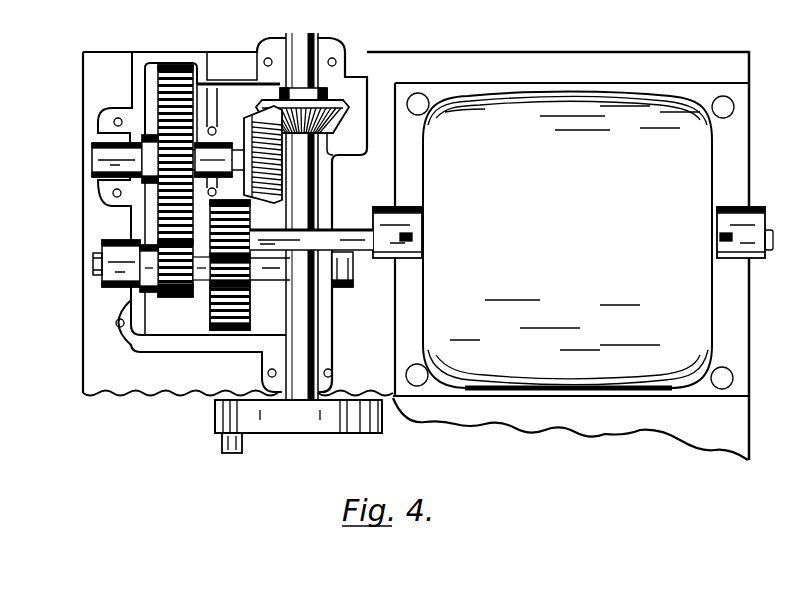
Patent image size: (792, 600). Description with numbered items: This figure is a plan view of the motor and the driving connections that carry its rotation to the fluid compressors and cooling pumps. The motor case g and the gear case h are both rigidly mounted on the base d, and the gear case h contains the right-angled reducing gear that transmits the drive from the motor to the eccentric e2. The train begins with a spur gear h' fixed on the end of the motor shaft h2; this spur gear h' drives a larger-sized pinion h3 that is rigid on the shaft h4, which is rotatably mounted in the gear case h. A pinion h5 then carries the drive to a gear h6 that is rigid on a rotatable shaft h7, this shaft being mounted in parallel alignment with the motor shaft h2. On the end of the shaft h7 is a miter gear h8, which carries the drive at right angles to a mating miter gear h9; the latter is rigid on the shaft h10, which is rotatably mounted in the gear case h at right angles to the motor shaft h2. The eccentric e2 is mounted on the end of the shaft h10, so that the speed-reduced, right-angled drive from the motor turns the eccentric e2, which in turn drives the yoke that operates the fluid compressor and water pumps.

The base d is at (397, 58).
The motor case g is at (573, 240).
The gear case h is at (219, 217).
The spur gear h' is at (212, 186).
The motor shaft h2 is at (311, 240).
The pinion h3 is at (250, 302).
The shaft h4 is at (203, 280).
The pinion h5 is at (167, 297).
The gear h6 is at (167, 90).
The shaft h7 is at (103, 158).
The miter gear h8 is at (260, 133).
The miter gear h9 is at (350, 122).
The shaft h10 is at (300, 321).
The eccentric e2 is at (298, 431).